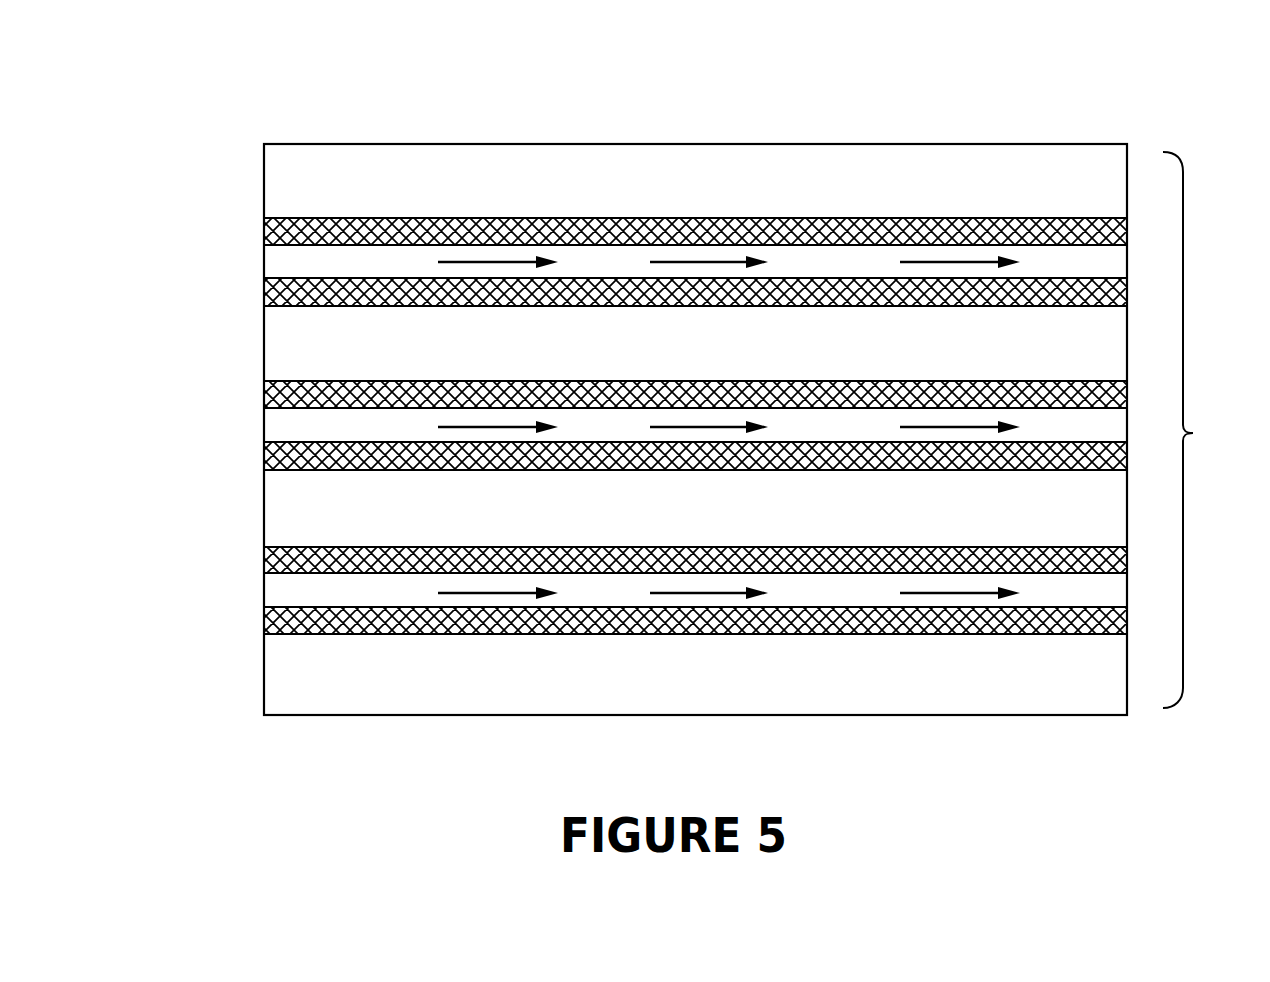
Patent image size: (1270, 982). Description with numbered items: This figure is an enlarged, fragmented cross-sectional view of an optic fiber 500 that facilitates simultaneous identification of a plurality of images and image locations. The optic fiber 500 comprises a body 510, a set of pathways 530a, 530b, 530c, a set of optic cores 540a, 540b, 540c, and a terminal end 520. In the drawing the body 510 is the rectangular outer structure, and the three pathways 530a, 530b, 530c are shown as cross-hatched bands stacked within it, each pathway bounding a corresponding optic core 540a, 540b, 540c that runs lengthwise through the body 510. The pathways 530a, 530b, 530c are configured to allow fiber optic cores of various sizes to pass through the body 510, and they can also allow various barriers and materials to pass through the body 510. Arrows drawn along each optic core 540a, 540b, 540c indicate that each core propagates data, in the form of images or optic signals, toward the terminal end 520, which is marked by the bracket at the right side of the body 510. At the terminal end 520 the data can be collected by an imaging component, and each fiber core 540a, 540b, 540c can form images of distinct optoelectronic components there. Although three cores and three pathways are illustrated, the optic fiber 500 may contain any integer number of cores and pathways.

The optic fiber 500 is at (803, 72).
The body 510 is at (360, 144).
The terminal end 520 is at (1203, 430).
The pathway 530a is at (330, 218).
The pathway 530b is at (330, 381).
The pathway 530c is at (330, 547).
The optic core 540a is at (282, 266).
The optic core 540b is at (278, 424).
The optic core 540c is at (276, 589).